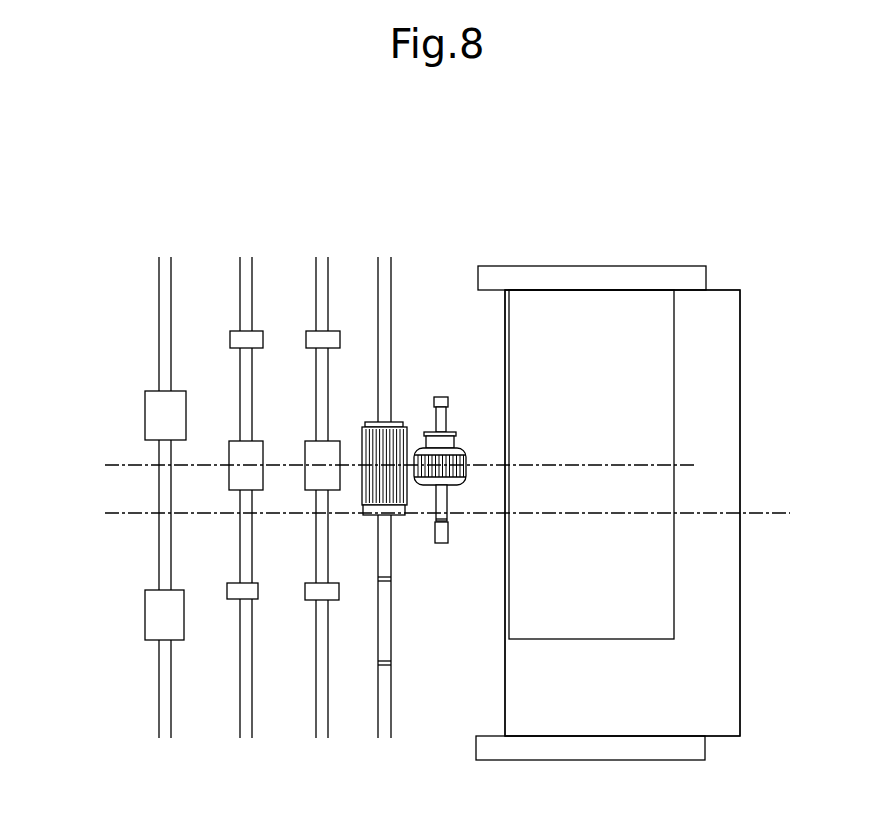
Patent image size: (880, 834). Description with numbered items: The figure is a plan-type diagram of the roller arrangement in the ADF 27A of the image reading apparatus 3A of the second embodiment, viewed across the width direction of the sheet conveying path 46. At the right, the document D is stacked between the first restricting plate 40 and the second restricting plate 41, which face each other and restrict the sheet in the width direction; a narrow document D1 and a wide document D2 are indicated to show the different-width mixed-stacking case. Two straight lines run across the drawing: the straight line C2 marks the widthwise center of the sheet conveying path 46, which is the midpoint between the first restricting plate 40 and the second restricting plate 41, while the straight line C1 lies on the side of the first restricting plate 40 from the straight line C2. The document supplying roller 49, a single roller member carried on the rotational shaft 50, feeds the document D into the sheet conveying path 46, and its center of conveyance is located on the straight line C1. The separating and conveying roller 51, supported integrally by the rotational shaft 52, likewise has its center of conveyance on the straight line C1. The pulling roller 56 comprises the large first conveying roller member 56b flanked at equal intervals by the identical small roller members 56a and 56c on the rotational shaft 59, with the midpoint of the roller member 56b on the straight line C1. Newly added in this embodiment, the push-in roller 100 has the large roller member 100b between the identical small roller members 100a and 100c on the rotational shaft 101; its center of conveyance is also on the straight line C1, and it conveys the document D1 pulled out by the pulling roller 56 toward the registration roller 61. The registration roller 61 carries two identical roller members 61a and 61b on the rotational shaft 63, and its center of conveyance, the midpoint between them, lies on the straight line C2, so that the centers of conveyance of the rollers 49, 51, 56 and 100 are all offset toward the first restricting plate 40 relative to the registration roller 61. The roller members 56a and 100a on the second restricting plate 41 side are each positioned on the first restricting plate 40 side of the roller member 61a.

The image reading apparatus 3A is at (143, 220).
The ADF 27A is at (370, 206).
The registration roller 61 is at (142, 318).
The second registration roller member 61a is at (148, 640).
The first registration roller member 61b is at (152, 391).
The rotational shaft 63 is at (171, 707).
The sheet conveying path 46 is at (119, 585).
The push-in roller 100 is at (227, 270).
The third push-in roller member 100a is at (233, 600).
The first push-in roller member 100b is at (237, 441).
The push-in roller member 100c is at (233, 331).
The rotational shaft 101 is at (252, 707).
The pulling roller 56 is at (343, 297).
The third conveying roller member 56a is at (305, 600).
The first conveying roller member 56b is at (312, 441).
The second conveying roller member 56c is at (310, 331).
The rotational shaft 59 is at (328, 707).
The rotational shaft 52 is at (391, 707).
The separating and conveying roller 51 is at (412, 428).
The document supplying roller 49 is at (457, 438).
The rotational shaft 50 is at (447, 546).
The straight line C1 is at (110, 465).
The straight line C2 is at (110, 513).
The first restricting plate 40 is at (568, 270).
The second restricting plate 41 is at (573, 753).
The document D is at (637, 207).
The document D1 is at (635, 302).
The document D2 is at (720, 302).